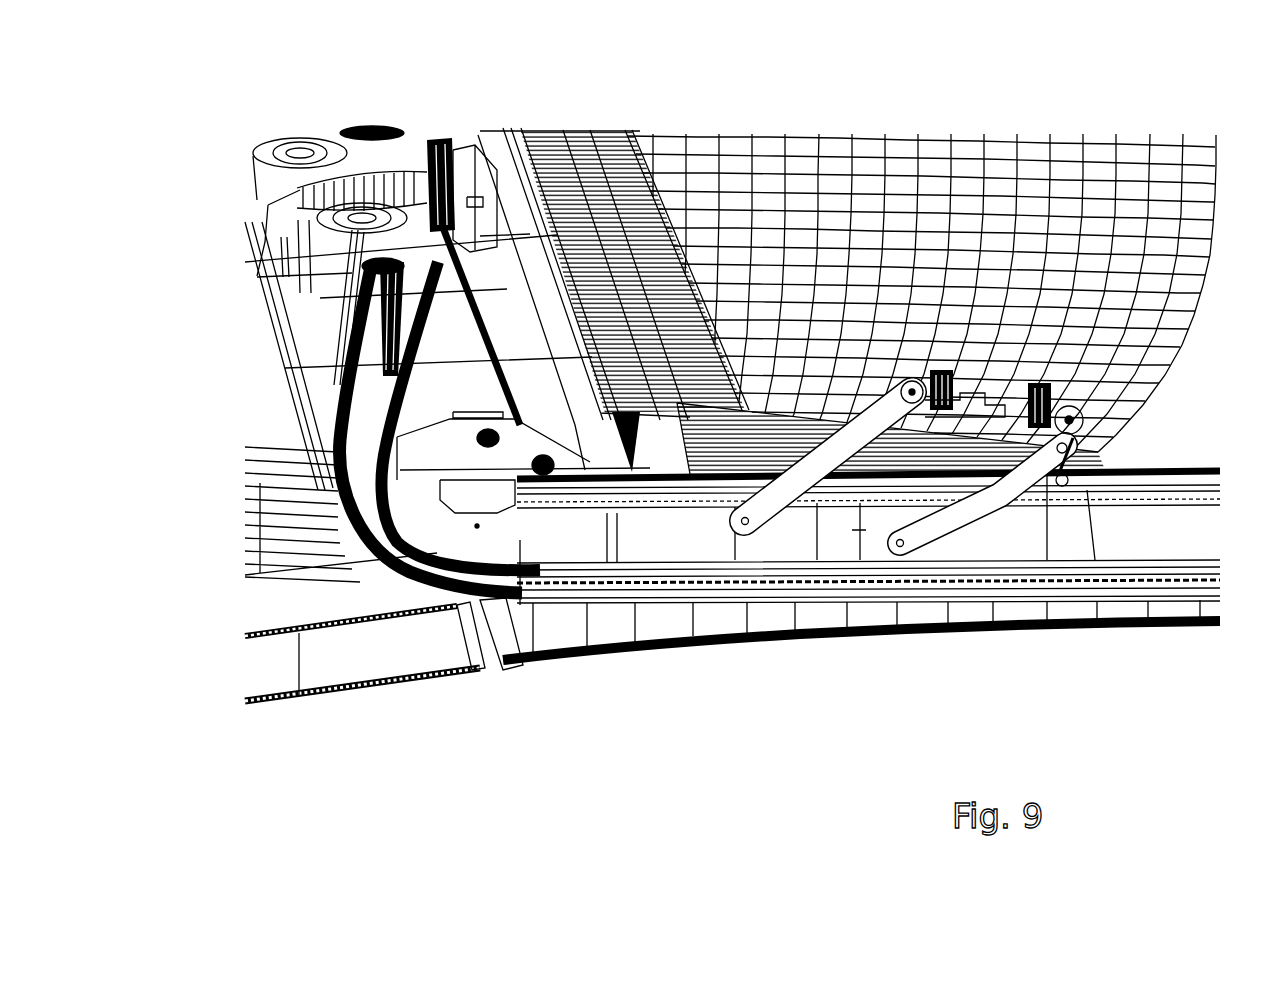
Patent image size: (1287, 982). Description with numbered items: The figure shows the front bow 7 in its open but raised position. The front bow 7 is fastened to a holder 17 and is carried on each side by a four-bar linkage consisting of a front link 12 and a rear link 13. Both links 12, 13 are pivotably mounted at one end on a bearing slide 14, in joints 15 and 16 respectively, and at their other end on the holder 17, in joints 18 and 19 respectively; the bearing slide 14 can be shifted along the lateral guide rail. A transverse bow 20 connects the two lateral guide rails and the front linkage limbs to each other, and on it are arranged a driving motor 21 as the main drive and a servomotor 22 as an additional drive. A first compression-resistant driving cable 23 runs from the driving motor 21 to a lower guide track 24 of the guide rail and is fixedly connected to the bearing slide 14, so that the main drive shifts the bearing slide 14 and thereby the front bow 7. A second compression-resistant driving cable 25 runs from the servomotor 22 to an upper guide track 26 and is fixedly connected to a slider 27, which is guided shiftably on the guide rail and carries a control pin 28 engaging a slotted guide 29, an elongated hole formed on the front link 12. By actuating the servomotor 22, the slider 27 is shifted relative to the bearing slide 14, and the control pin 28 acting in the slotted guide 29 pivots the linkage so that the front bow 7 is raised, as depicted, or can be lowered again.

The front bow 7 is at (1162, 224).
The front link 12 is at (997, 475).
The rear link 13 is at (806, 475).
The bearing slide 14 is at (860, 537).
The joint 15 is at (903, 546).
The joint 16 is at (745, 522).
The holder 17 is at (1015, 365).
The joint 18 is at (1085, 431).
The joint 19 is at (985, 398).
The transverse bow 20 is at (302, 326).
The driving motor 21 is at (466, 166).
The servomotor 22 is at (300, 123).
The first compression-resistant driving cable 23 is at (391, 130).
The lower guide track 24 is at (533, 582).
The second compression-resistant driving cable 25 is at (386, 567).
The upper guide track 26 is at (616, 520).
The slider 27 is at (1095, 560).
The control pin 28 is at (1046, 560).
The slotted guide 29 is at (1066, 449).